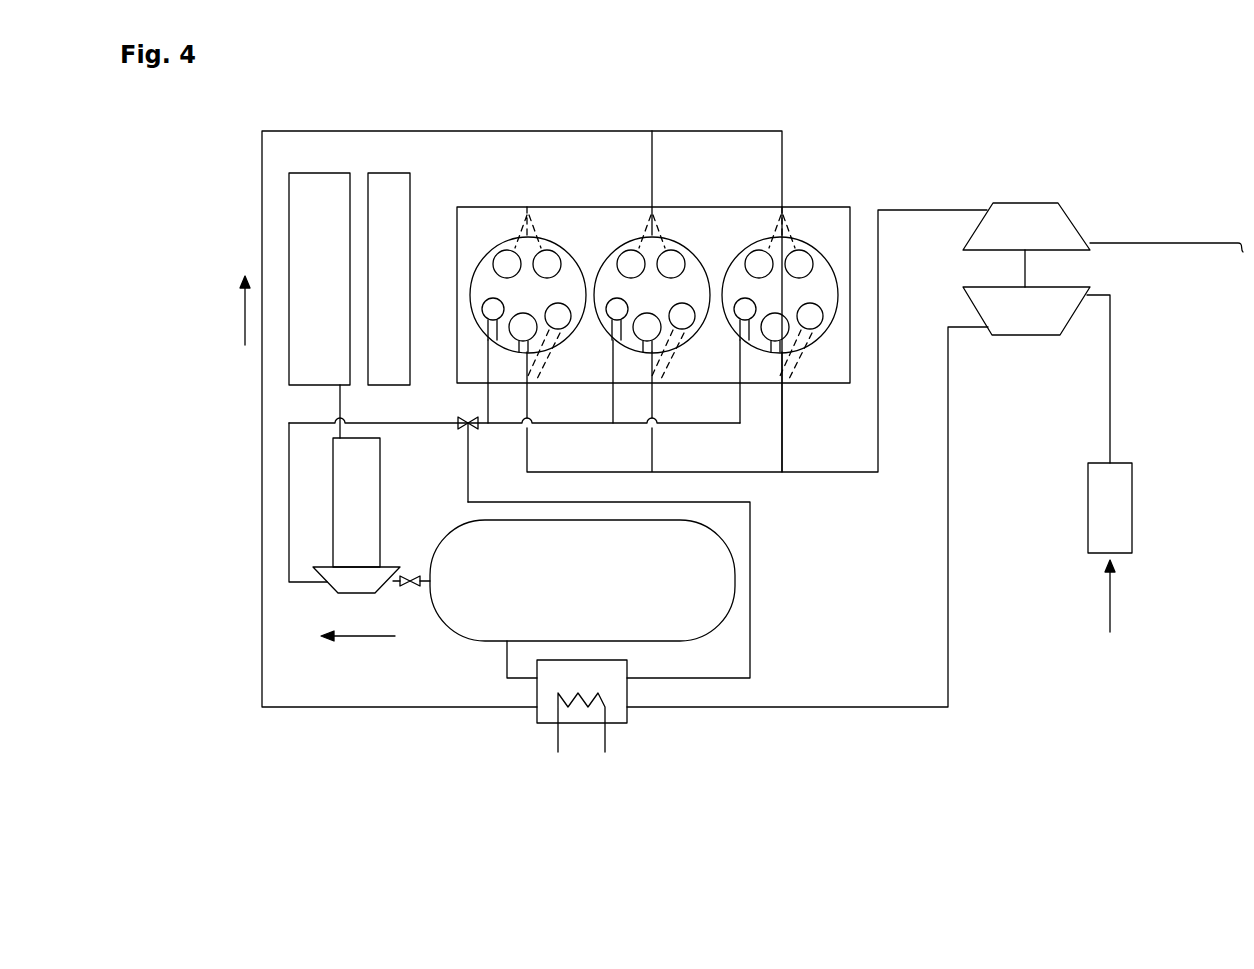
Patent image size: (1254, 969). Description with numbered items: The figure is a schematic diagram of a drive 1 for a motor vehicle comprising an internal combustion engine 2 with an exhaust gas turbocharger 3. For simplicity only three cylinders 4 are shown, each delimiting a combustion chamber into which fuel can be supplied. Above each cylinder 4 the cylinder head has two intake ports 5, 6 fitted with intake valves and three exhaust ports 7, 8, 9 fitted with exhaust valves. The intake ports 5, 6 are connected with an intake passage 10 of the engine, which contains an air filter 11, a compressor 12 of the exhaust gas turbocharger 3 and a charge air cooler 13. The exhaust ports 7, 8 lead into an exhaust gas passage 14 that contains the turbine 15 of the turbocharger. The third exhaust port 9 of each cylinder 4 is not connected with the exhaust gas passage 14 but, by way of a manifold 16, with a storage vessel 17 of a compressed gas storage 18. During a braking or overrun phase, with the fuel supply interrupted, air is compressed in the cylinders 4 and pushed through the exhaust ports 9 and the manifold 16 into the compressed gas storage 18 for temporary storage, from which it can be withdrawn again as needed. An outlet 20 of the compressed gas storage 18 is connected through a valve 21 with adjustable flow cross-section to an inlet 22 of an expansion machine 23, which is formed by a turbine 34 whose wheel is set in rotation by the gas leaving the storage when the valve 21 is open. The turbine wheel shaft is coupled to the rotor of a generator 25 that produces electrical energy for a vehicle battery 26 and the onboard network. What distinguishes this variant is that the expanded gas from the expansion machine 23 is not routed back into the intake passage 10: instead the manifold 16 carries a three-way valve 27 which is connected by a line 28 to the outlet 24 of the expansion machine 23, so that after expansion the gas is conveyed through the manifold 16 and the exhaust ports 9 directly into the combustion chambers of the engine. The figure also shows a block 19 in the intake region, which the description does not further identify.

The drive 1 is at (855, 112).
The internal combustion engine 2 is at (840, 197).
The exhaust gas turbocharger 3 is at (1056, 186).
The cylinder 4 is at (573, 270).
The intake port 5 is at (505, 265).
The intake port 6 is at (545, 265).
The exhaust port 7 is at (558, 317).
The exhaust port 8 is at (532, 336).
The exhaust port 9 is at (493, 307).
The intake passage 10 is at (592, 121).
The air filter 11 is at (1110, 547).
The compressor 12 is at (1036, 375).
The charge air cooler 13 is at (617, 715).
The exhaust gas passage 14 is at (836, 480).
The turbine 15 is at (1103, 245).
The manifold 16 is at (466, 460).
The storage vessel 17 is at (582, 580).
The compressed gas storage 18 is at (747, 596).
The throttle 19 is at (389, 279).
The outlet 20 is at (423, 588).
The valve 21 is at (413, 588).
The inlet 22 is at (405, 587).
The expansion machine 23 is at (332, 555).
The outlet 24 is at (327, 587).
The generator 25 is at (356, 476).
The vehicle battery 26 is at (319, 279).
The three-way valve 27 is at (471, 436).
The line 28 is at (290, 582).
The turbine 34 is at (381, 577).